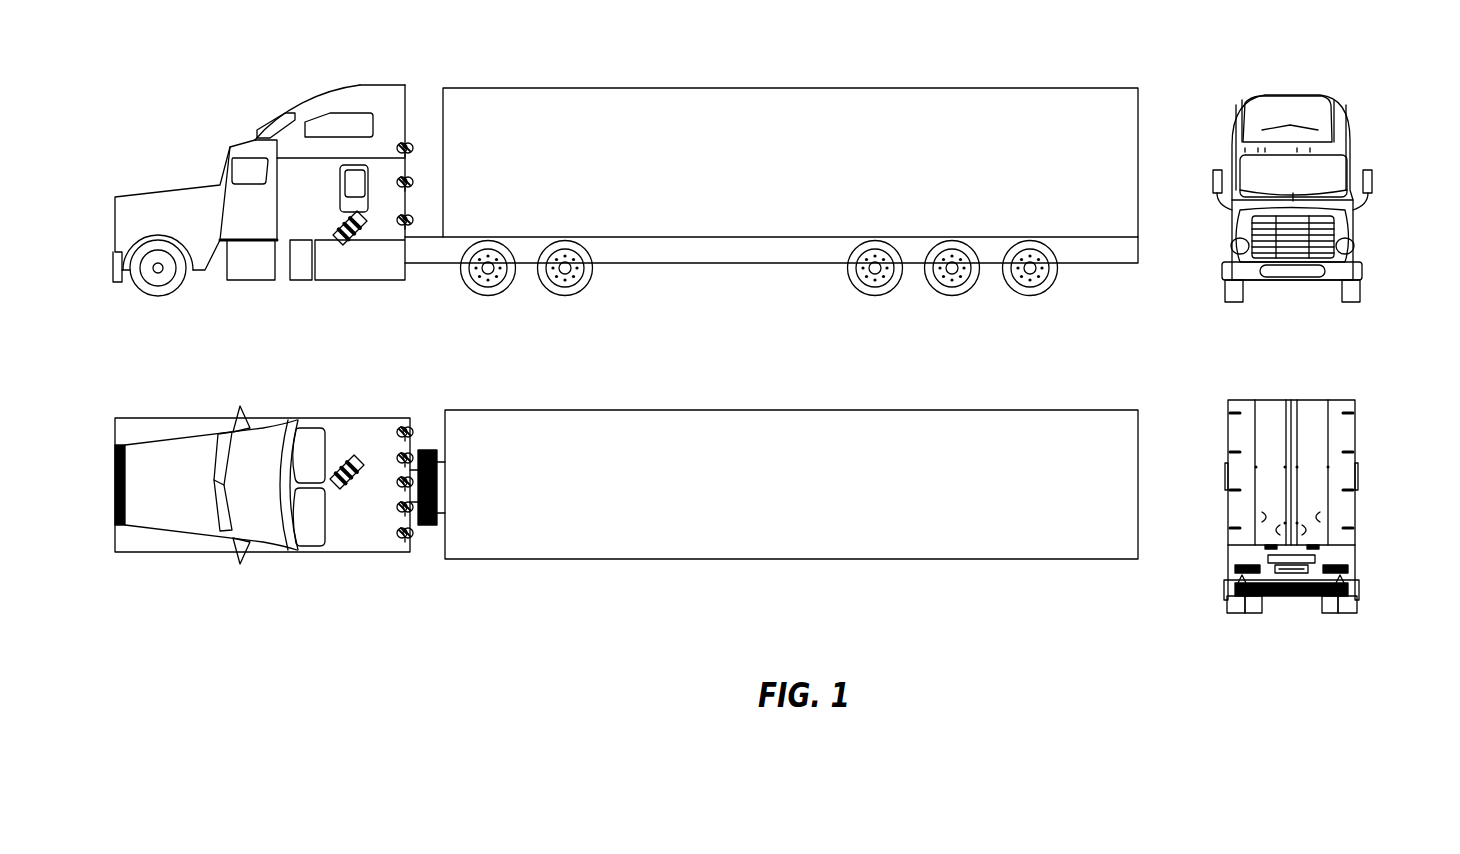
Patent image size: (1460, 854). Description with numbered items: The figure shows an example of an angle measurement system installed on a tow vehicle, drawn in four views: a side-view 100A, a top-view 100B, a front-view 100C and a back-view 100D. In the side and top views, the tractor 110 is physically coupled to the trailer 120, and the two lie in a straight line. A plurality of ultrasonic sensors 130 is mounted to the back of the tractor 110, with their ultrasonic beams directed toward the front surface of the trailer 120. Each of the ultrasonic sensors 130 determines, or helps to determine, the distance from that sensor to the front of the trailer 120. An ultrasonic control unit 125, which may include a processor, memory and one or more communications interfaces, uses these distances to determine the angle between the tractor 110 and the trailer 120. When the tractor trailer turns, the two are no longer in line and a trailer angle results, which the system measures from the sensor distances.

The side-view 100A is at (153, 128).
The top-view 100B is at (153, 389).
The front-view 100C is at (1455, 129).
The back-view 100D is at (1455, 432).
The tractor 110 is at (360, 92).
The trailer 120 is at (692, 88).
The ultrasonic control unit 125 is at (335, 458).
The ultrasonic sensors 130 is at (397, 190).